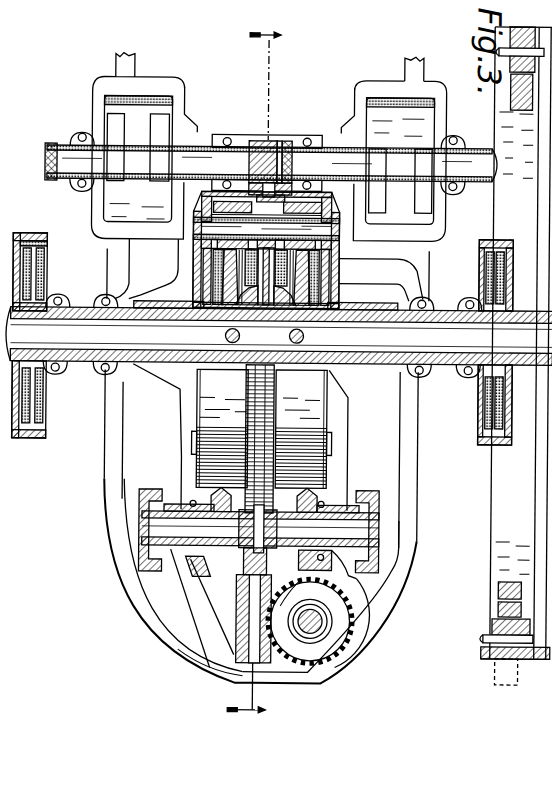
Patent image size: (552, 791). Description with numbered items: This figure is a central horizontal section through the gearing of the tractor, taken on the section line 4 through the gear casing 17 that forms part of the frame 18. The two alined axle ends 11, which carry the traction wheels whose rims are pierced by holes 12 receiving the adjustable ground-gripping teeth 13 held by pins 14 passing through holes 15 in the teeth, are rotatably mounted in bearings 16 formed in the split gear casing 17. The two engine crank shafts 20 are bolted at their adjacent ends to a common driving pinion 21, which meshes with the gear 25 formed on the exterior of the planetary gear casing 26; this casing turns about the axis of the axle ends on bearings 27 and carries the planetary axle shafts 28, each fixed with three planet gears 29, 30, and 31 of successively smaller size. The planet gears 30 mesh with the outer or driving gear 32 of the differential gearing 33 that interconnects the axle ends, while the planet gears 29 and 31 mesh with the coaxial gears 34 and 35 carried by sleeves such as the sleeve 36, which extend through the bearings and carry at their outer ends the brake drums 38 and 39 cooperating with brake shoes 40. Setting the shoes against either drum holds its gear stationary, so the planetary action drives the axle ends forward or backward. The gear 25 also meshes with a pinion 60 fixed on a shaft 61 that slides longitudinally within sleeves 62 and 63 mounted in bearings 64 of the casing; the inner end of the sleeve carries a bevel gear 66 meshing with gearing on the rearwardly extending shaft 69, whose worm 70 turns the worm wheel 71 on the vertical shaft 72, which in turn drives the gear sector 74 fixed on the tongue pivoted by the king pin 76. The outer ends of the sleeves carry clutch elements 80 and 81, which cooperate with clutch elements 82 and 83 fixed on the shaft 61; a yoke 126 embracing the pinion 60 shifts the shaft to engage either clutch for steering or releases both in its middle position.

The section line 4— 4 is at (254, 368).
The axle ends 11 is at (88, 333).
The holes 12 is at (485, 637).
The teeth 13 is at (500, 680).
The pins 14 is at (500, 606).
The holes 15 is at (500, 585).
The bearings 16 is at (105, 385).
The split gear casing 17 is at (172, 400).
The frame 18 is at (109, 572).
The crank shafts 20 is at (128, 142).
The driving pinion 21 is at (262, 139).
The gear 25 is at (228, 150).
The planetary gear casing 26 is at (320, 405).
The bearings 27 is at (160, 303).
The planetary axle shafts 28 is at (195, 227).
The planet gear 29 is at (306, 134).
The planet gear 30 is at (278, 140).
The planet gear 31 is at (210, 165).
The driving gear 32 is at (97, 300).
The differential gearing 33 is at (322, 410).
The gear 34 is at (352, 262).
The gear 35 is at (195, 266).
The sleeve 36 is at (430, 300).
The brake drum 38 is at (36, 440).
The brake drum 39 is at (478, 440).
The brake shoes 40 is at (46, 425).
The pinion 60 is at (244, 575).
The shaft 61 is at (185, 538).
The sleeve 62 is at (186, 576).
The sleeve 63 is at (368, 600).
The bearings 64 is at (338, 505).
The bevel gear 66 is at (214, 502).
The rearwardly extending shaft 69 is at (261, 664).
The worm 70 is at (243, 615).
The worm wheel 71 is at (330, 638).
The vertical shaft 72 is at (313, 643).
The gear sector 74 is at (185, 652).
The king pin 76 is at (246, 502).
The clutch element 80 is at (150, 522).
The clutch element 81 is at (400, 506).
The clutch element 82 is at (126, 520).
The clutch element 83 is at (380, 512).
The yoke 126 is at (296, 596).